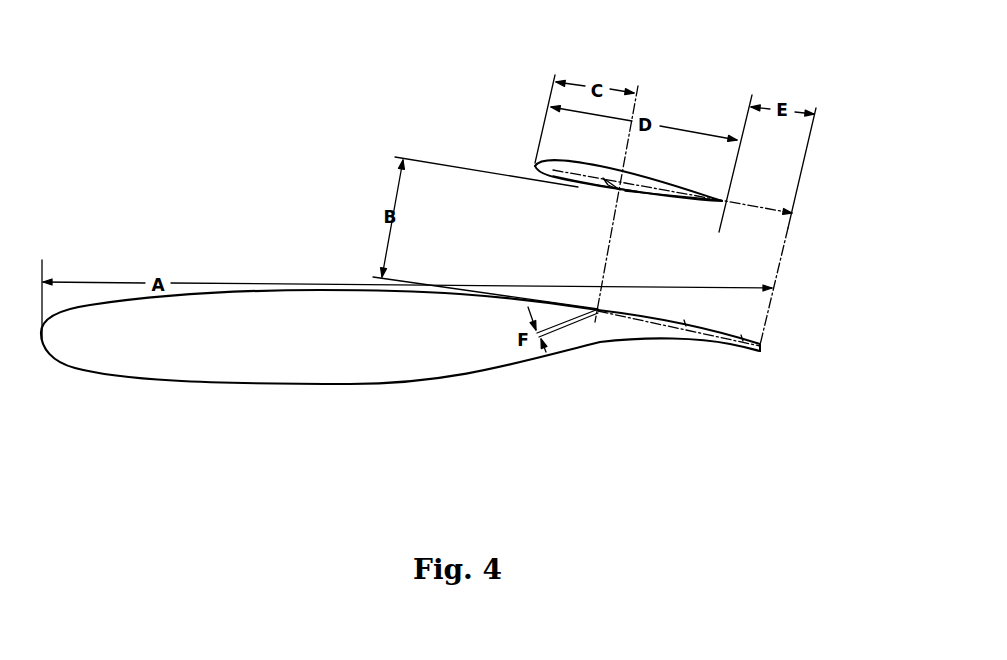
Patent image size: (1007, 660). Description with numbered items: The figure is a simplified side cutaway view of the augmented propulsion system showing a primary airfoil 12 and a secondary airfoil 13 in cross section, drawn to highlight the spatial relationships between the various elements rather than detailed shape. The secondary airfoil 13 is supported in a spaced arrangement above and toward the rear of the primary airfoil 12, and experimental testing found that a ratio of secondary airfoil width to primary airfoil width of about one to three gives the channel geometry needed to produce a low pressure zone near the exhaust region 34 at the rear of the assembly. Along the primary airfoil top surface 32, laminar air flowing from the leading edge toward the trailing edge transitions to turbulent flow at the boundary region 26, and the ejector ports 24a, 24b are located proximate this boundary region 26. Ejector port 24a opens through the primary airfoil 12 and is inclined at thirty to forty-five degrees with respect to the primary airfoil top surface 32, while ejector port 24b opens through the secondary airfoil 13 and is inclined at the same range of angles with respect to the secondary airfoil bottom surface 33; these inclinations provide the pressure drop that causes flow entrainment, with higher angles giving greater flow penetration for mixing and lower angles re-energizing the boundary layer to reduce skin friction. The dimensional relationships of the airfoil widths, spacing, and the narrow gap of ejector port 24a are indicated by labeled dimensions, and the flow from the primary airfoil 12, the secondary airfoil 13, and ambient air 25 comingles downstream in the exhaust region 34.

The primary airfoil 12 is at (115, 278).
The secondary airfoil 13 is at (605, 140).
The ambient air 25 is at (455, 217).
The primary airfoil top surface 32 is at (273, 287).
The secondary airfoil bottom surface 33 is at (578, 188).
The ejector port 24a is at (596, 322).
The ejector port 24b is at (621, 192).
The boundary region 26 is at (540, 284).
The exhaust region 34 is at (750, 228).